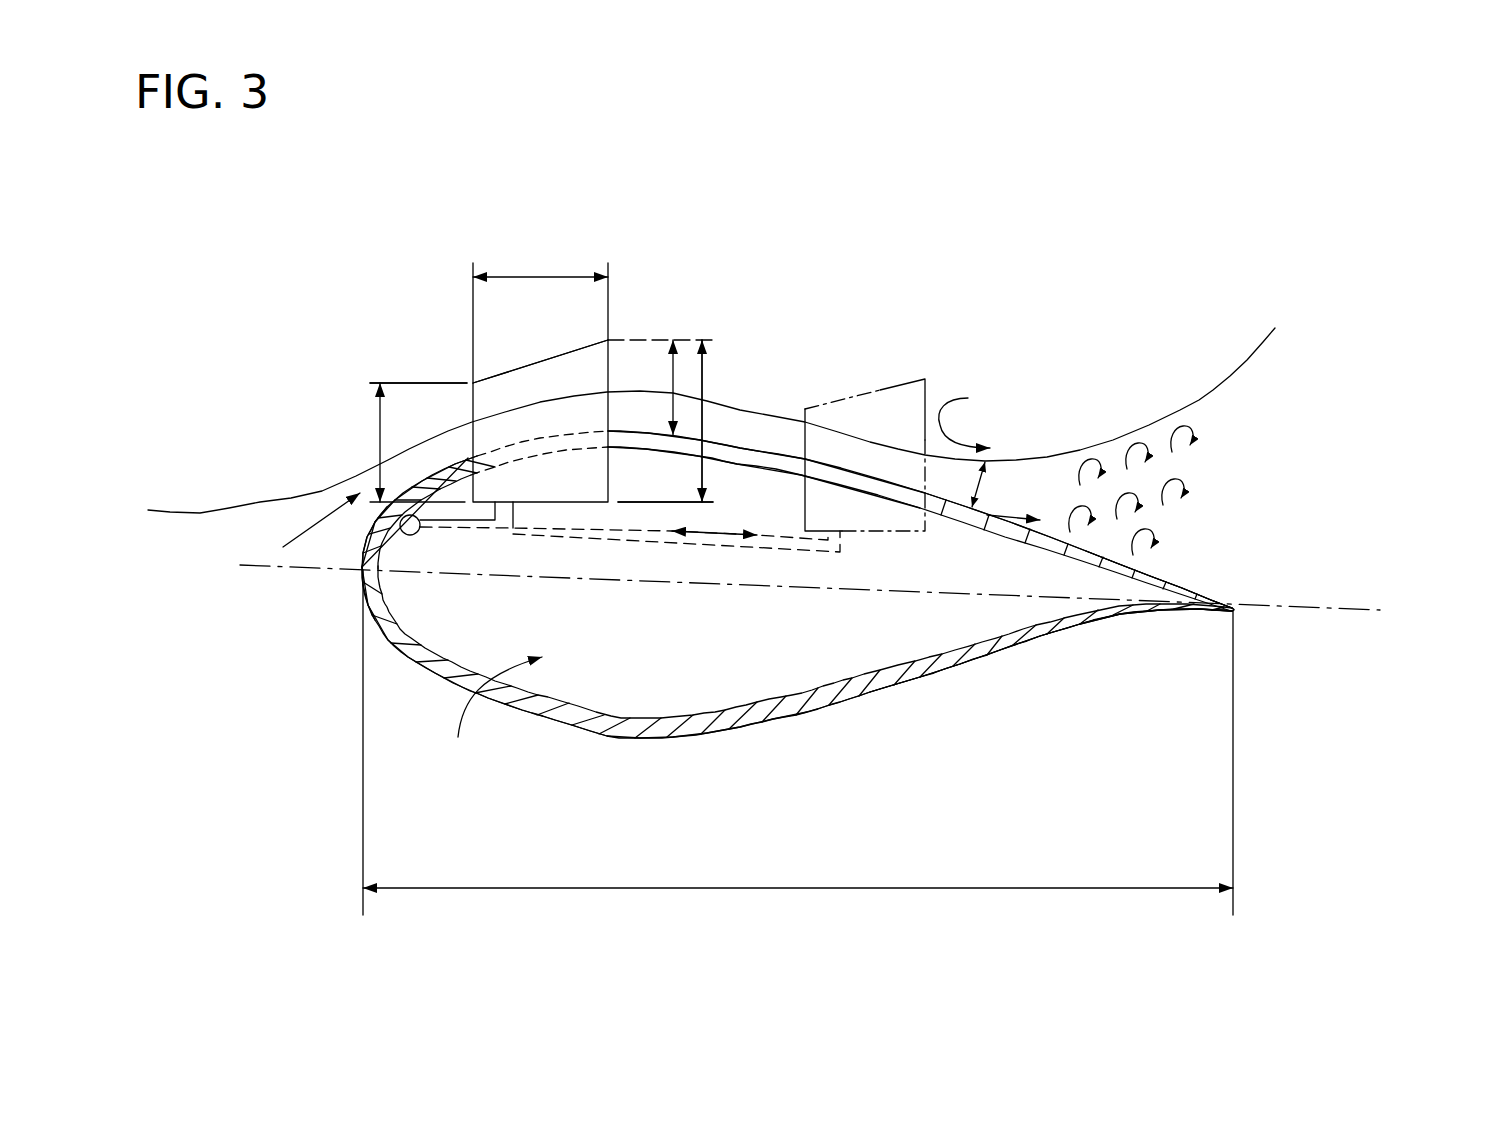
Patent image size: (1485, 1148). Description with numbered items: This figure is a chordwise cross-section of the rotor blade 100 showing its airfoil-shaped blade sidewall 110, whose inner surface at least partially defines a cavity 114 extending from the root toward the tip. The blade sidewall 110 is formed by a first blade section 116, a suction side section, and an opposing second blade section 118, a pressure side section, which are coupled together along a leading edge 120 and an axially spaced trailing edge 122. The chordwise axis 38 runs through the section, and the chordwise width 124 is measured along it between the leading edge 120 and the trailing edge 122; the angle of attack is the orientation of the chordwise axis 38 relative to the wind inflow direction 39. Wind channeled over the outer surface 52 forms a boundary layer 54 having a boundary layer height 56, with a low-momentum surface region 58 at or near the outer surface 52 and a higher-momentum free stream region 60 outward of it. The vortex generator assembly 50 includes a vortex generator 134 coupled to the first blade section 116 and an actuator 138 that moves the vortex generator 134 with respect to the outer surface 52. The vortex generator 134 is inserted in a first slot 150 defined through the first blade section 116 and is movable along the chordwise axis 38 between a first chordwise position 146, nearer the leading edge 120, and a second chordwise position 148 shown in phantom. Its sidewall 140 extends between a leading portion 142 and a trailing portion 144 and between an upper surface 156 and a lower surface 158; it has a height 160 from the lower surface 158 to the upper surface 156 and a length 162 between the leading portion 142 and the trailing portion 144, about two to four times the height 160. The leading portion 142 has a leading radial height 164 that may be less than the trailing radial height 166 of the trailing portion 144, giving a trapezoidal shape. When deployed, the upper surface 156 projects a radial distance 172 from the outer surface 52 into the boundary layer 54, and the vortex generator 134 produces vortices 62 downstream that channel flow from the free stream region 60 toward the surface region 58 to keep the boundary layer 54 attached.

The chordwise axis 38 is at (1380, 610).
The wind inflow direction 39 is at (305, 533).
The vortex generator assembly 50 is at (919, 377).
The outer surface 52 is at (1168, 580).
The boundary layer 54 is at (322, 492).
The boundary layer height 56 is at (985, 487).
The surface region 58 is at (977, 517).
The free stream region 60 is at (971, 416).
The vortices 62 is at (1195, 463).
The rotor blade 100 is at (1275, 280).
The blade sidewall 110 is at (697, 738).
The cavity 114 is at (487, 710).
The first blade section 116 is at (1213, 595).
The second blade section 118 is at (968, 659).
The leading edge 120 is at (363, 588).
The trailing edge 122 is at (1237, 613).
The chordwise width 124 is at (905, 886).
The vortex generator 134 is at (507, 370).
The actuator 138 is at (417, 546).
The sidewall 140 is at (597, 365).
The leading portion 142 is at (467, 427).
The trailing portion 144 is at (607, 413).
The first chordwise position 146 is at (571, 325).
The second chordwise position 148 is at (883, 377).
The first slot 150 is at (756, 450).
The upper surface 156 is at (563, 345).
The lower surface 158 is at (557, 502).
The height 160 is at (702, 377).
The length 162 is at (517, 273).
The leading radial height 164 is at (375, 425).
The trailing radial height 166 is at (702, 387).
The radial distance 172 is at (677, 373).